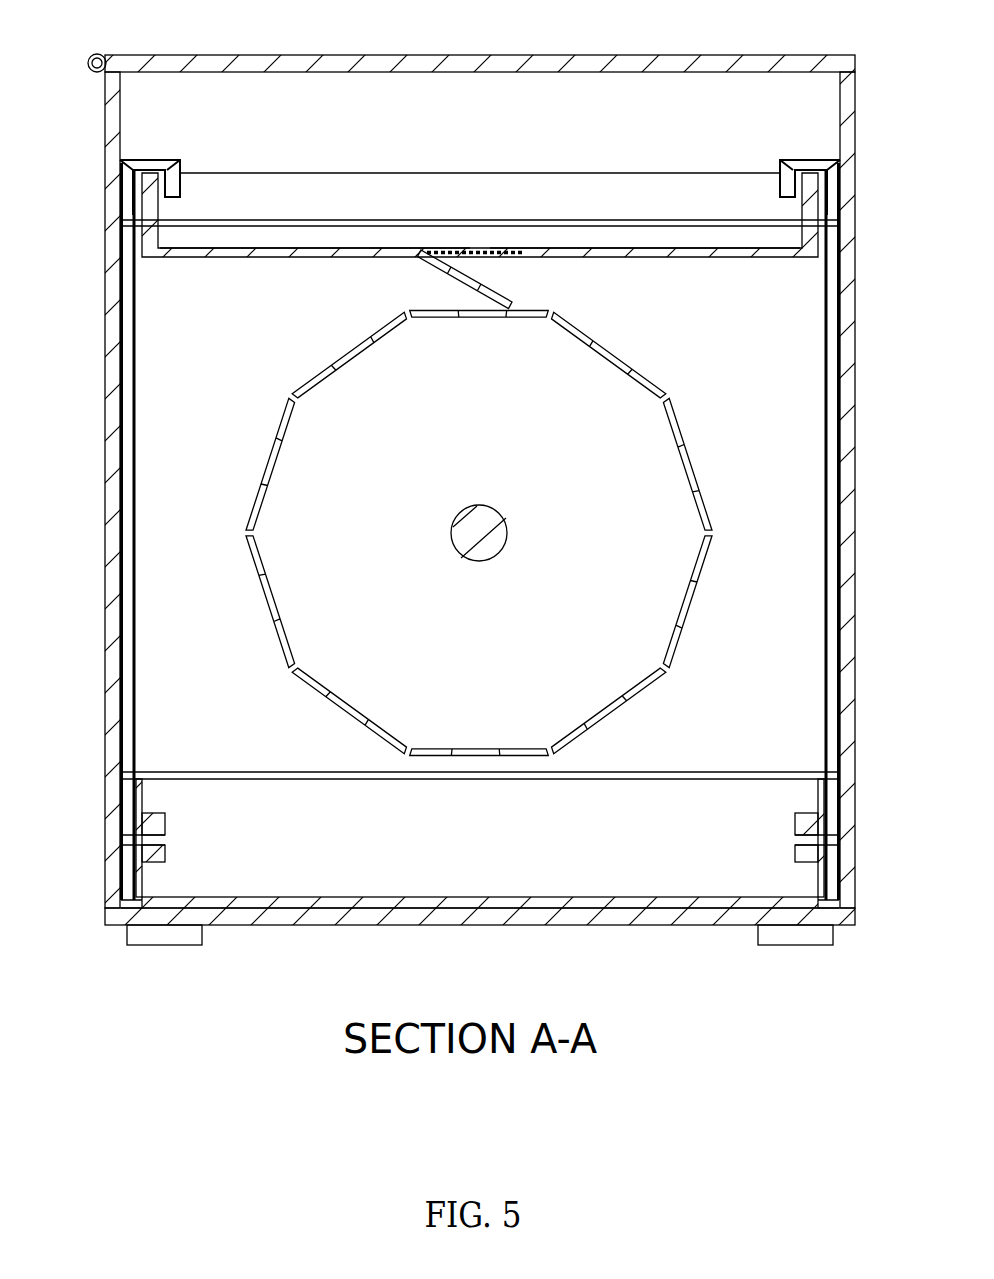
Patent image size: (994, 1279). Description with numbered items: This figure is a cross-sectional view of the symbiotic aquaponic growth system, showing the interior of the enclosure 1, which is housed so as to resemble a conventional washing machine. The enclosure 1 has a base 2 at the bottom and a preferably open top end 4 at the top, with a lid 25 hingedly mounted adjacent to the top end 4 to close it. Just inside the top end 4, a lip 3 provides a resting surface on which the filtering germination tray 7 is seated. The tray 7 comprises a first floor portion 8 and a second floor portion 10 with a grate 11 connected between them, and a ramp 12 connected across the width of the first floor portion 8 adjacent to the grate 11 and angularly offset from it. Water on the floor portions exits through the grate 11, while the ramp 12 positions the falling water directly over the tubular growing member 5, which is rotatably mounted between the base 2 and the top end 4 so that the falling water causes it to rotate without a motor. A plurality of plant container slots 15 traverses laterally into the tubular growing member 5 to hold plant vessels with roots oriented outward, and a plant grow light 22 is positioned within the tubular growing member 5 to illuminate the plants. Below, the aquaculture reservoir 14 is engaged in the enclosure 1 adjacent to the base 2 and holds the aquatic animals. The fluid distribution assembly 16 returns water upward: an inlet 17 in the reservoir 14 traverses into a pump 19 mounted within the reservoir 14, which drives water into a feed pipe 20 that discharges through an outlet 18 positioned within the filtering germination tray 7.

The enclosure 1 is at (78, 391).
The base 2 is at (852, 926).
The lip 3 is at (838, 225).
The top end 4 is at (857, 63).
The tubular growing member 5 is at (460, 533).
The filtering germination tray 7 is at (240, 265).
The first floor portion 8 is at (318, 261).
The second floor portion 10 is at (706, 261).
The grate 11 is at (519, 261).
The ramp 12 is at (452, 275).
The aquaculture reservoir 14 is at (447, 911).
The plurality of plant container slots 15 is at (268, 456).
The fluid distribution assembly 16 is at (140, 606).
The inlet 17 is at (168, 838).
The outlet 18 is at (173, 200).
The pump 19 is at (163, 849).
The feed pipe 20 is at (128, 434).
The plant grow light 22 is at (485, 513).
The lid 25 is at (275, 60).